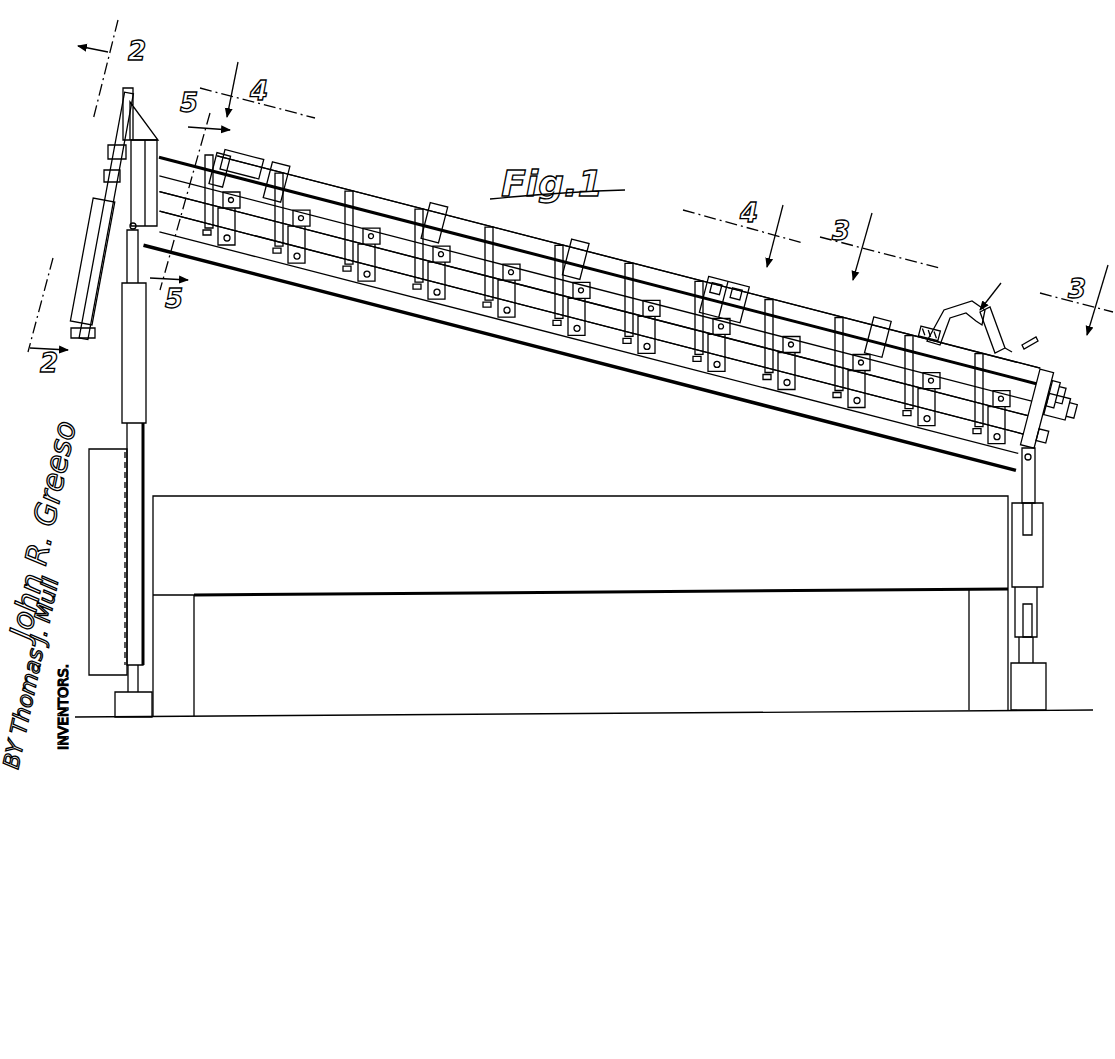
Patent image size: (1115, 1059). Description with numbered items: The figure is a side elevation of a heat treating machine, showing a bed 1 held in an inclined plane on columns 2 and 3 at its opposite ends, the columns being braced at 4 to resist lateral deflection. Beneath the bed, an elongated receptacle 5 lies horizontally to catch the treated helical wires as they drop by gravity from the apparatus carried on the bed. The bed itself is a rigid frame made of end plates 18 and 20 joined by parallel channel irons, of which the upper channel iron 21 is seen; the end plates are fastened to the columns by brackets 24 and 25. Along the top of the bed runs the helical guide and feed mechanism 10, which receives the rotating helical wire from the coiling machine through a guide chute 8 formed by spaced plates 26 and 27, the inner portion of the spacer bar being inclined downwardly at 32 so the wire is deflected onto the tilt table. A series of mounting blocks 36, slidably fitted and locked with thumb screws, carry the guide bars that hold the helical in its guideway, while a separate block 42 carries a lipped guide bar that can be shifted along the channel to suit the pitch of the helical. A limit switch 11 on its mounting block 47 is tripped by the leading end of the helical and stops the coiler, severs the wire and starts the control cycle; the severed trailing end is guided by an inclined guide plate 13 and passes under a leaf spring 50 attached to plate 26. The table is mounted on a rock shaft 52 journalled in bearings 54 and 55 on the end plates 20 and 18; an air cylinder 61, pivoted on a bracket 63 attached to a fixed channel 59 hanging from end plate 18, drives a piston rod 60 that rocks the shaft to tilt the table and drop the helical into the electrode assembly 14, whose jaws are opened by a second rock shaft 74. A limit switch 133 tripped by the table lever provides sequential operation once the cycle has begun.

The bed 1 is at (600, 366).
The column 2 is at (142, 388).
The column 3 is at (1034, 563).
The brace 4 is at (135, 482).
The elongated receptacle 5 is at (608, 512).
The guide chute 8 is at (994, 285).
The helical guide and feed mechanism 10 is at (632, 268).
The limit switch 11 is at (243, 165).
The inclined guide plate 13 is at (1040, 355).
The electrode assembly 14 is at (572, 300).
The end plate 18 is at (160, 152).
The end plate 20 is at (1045, 414).
The upper channel iron 21 is at (505, 238).
The bracket 24 is at (143, 268).
The bracket 25 is at (1020, 486).
The chute plate 26 is at (947, 318).
The bottom plate of chute 27 is at (1010, 350).
The inclined portion of spacer bar 32 is at (928, 332).
The mounting block 36 is at (287, 186).
The block 42 is at (712, 286).
The mounting block 47 is at (221, 158).
The leaf spring 50 is at (1000, 340).
The rock shaft 52 is at (1064, 392).
The bearing 54 is at (1058, 380).
The bearing 55 is at (104, 175).
The fixed channel 59 is at (93, 334).
The piston rod 60 is at (108, 153).
The air cylinder 61 is at (90, 236).
The bracket 63 is at (70, 316).
The rock shaft 74 is at (392, 280).
The limit switch 133 is at (122, 92).